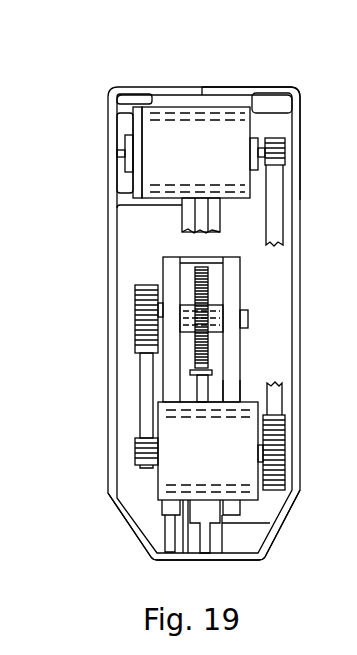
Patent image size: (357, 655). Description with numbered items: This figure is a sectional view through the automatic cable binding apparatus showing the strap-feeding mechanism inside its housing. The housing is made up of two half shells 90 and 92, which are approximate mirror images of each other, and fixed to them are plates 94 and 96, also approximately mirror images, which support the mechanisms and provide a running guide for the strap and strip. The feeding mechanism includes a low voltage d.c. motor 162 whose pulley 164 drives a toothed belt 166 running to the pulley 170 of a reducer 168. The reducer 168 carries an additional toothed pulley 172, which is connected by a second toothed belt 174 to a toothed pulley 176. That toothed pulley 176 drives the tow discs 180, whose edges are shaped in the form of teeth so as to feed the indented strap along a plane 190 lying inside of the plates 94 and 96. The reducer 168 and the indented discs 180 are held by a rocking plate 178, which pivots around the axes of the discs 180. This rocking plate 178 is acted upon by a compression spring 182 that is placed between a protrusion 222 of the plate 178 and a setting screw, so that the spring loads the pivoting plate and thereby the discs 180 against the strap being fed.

The half shell 90 is at (177, 97).
The half shell 92 is at (227, 95).
The plate 94 is at (188, 372).
The plate 96 is at (215, 392).
The low voltage d.c. motor 162 is at (227, 142).
The pulley 164 is at (273, 152).
The toothed belt 166 is at (272, 208).
The reducer 168 is at (225, 475).
The pulley 170 is at (277, 452).
The toothed pulley 172 is at (142, 450).
The toothed belt 174 is at (147, 363).
The toothed pulley 176 is at (143, 308).
The rocking plate 178 is at (170, 268).
The tow discs 180 is at (207, 322).
The compression spring 182 is at (150, 550).
The plane 190 is at (200, 388).
The protrusion 222 is at (170, 527).